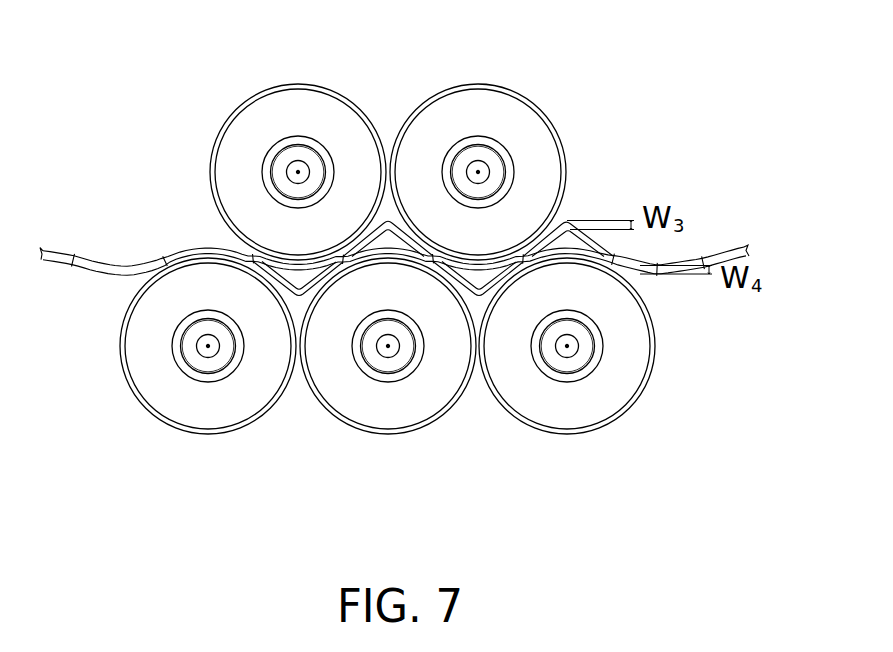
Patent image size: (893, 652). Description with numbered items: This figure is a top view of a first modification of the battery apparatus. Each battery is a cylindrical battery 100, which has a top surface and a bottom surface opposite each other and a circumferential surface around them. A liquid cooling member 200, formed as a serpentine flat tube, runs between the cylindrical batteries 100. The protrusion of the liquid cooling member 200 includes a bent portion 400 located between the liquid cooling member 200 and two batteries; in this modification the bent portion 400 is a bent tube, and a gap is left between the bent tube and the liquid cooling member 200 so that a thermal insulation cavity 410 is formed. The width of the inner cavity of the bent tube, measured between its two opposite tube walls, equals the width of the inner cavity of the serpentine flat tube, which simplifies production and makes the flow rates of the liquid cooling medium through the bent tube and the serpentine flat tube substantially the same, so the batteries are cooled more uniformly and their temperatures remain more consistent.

The cylindrical battery 100 is at (283, 122).
The liquid cooling member 200 is at (117, 267).
The bent portion 400 is at (558, 230).
The thermal insulation cavity 410 is at (388, 236).